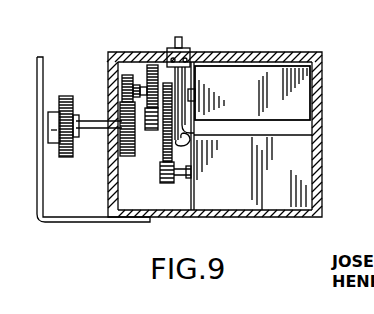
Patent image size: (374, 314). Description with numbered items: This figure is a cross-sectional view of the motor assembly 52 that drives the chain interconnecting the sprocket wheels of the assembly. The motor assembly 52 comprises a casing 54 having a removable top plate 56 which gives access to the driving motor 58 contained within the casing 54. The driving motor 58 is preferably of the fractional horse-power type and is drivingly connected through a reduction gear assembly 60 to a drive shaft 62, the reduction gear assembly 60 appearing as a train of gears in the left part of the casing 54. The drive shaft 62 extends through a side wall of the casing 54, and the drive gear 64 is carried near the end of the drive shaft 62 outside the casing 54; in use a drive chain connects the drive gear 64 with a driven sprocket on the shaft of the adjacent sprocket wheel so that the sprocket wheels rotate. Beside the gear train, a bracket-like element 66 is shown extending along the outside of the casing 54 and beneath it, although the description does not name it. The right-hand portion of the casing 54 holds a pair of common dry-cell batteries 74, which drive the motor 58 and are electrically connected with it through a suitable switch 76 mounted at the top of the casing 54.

The motor assembly 52 is at (322, 127).
The casing 54 is at (318, 194).
The removable top plate 56 is at (259, 53).
The driving motor 58 is at (302, 171).
The reduction gear assembly 60 is at (143, 76).
The drive shaft 62 is at (93, 120).
The drive gear 64 is at (68, 94).
The bracket 66 is at (48, 222).
The dry-cell batteries 74 is at (307, 95).
The switch 76 is at (190, 49).